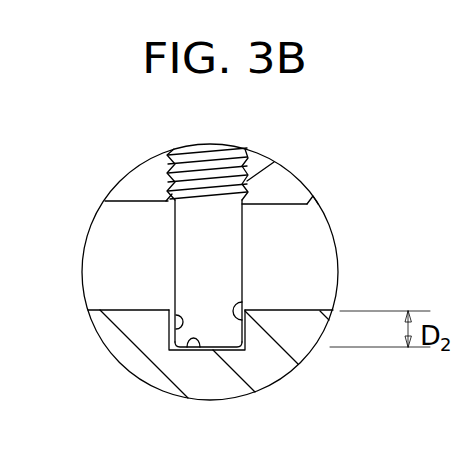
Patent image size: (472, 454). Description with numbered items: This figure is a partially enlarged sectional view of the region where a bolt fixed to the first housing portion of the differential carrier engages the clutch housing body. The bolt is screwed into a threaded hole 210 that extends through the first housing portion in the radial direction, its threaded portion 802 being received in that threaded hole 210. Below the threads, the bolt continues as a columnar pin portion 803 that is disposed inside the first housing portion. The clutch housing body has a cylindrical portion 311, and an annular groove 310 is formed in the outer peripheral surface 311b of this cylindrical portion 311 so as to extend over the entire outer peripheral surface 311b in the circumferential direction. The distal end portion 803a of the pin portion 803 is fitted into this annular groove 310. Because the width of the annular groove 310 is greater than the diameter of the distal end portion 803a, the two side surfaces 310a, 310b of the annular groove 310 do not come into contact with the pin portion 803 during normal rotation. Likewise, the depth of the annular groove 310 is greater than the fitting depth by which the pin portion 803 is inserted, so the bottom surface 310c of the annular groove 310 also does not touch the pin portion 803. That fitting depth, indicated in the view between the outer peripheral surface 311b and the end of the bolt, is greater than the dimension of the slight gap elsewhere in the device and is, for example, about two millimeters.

The threaded portion 802 is at (193, 163).
The pin portion 803 is at (228, 248).
The distal end portion 803a is at (208, 337).
The threaded hole 210 is at (259, 184).
The annular groove 310 is at (160, 303).
The side surface 310a is at (230, 303).
The side surface 310b is at (181, 327).
The bottom surface 310c is at (187, 339).
The cylindrical portion 311 is at (277, 360).
The outer peripheral surface 311b is at (117, 308).